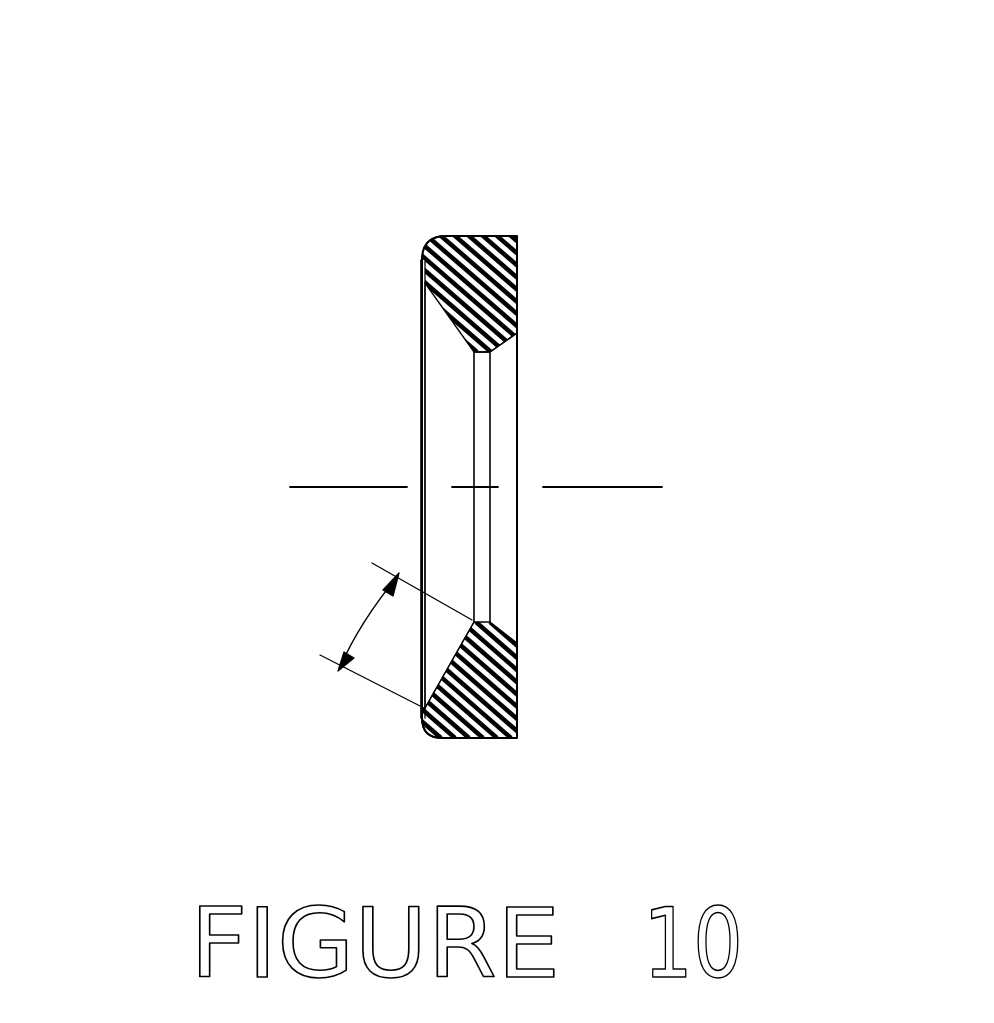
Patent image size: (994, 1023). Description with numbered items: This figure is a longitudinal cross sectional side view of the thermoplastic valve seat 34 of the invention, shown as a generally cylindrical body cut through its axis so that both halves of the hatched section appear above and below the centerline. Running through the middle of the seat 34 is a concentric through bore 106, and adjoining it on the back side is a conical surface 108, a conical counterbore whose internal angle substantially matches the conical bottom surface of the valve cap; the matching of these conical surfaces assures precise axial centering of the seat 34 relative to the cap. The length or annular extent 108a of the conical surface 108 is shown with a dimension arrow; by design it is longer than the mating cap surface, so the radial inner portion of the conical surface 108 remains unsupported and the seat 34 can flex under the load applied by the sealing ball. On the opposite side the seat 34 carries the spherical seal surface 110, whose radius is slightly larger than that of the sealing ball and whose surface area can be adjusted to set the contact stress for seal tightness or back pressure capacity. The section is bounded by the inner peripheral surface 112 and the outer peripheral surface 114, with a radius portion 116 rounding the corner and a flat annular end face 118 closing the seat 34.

The valve seat 34 is at (440, 228).
The concentric through bore 106 is at (476, 452).
The conical surface 108 is at (450, 302).
The annular extent of conical surface 108a is at (360, 620).
The spherical seal surface 110 is at (505, 342).
The inner peripheral surface 112 is at (483, 598).
The outer peripheral surface 114 is at (478, 740).
The radius portion 116 is at (423, 735).
The flat annular end face 118 is at (518, 271).